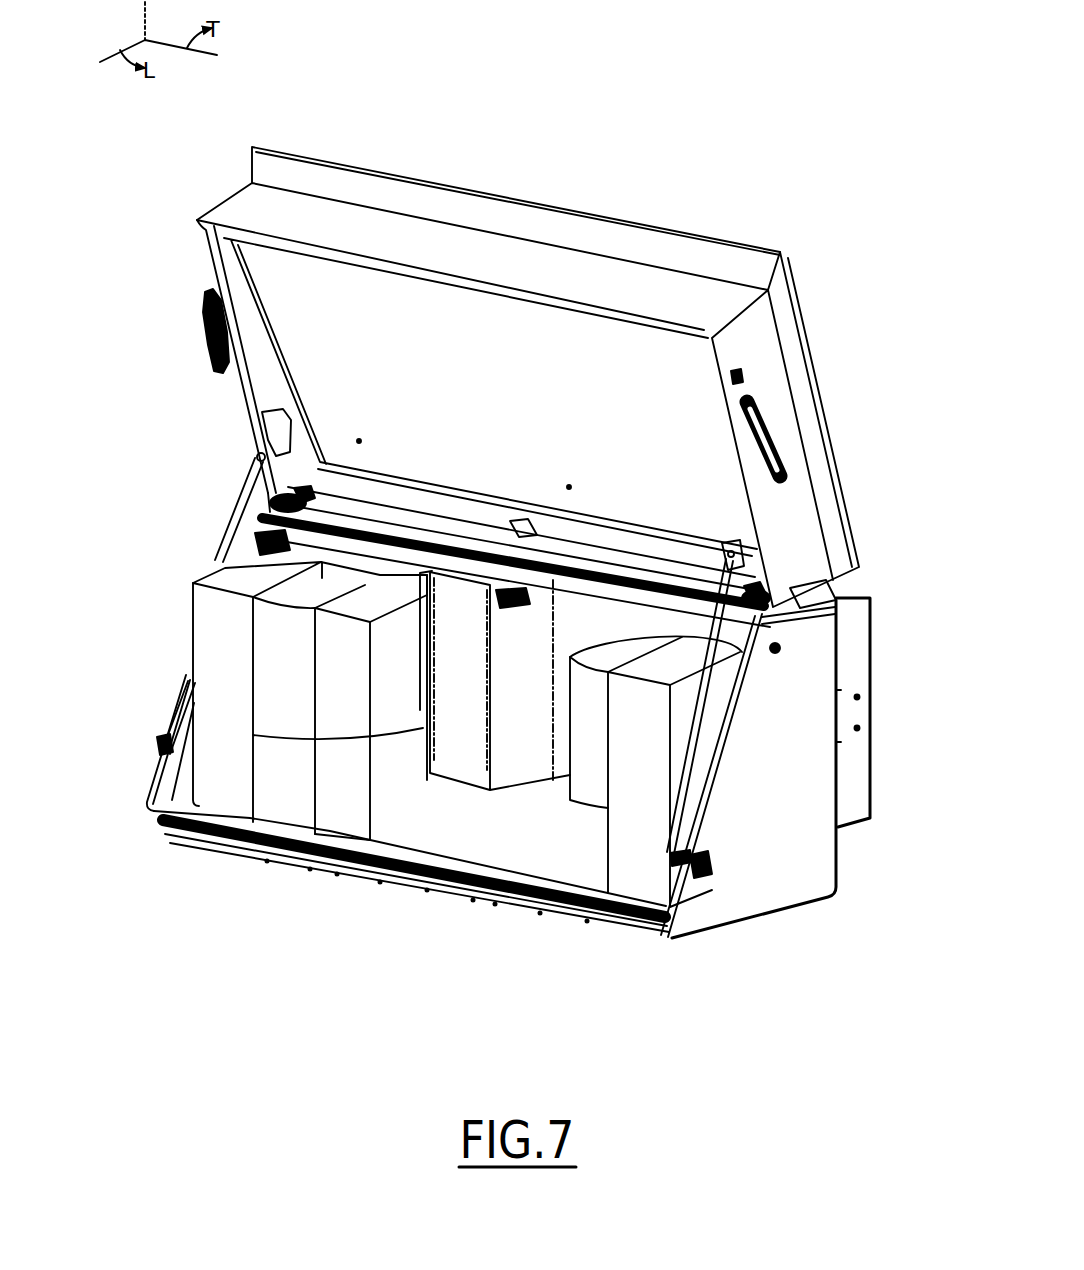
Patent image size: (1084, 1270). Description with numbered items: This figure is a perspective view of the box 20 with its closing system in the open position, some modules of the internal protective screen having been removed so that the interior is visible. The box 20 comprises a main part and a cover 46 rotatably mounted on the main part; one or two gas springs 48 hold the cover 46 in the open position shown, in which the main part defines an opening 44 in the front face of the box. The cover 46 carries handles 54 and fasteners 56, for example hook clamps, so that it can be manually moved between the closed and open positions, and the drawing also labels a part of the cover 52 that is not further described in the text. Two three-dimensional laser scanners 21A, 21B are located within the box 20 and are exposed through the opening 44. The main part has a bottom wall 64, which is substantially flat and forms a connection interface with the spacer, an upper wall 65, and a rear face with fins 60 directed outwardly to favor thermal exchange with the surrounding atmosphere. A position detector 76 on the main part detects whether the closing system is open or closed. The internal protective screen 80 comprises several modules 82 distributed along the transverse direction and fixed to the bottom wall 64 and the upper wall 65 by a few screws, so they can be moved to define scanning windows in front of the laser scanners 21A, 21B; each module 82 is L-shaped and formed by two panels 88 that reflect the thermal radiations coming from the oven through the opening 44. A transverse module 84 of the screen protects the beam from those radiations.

The box 20 is at (160, 430).
The 3D laser scanner 21A is at (285, 708).
The 3D laser scanner 21B is at (583, 767).
The opening 44 is at (205, 530).
The cover 46 is at (622, 280).
The gas spring 48 is at (254, 500).
The lid 52 is at (806, 338).
The handle 54 is at (775, 437).
The fastener 56 is at (157, 742).
The fins 60 is at (830, 592).
The bottom wall 64 is at (344, 882).
The upper wall 65 is at (817, 585).
The position detector 76 is at (500, 620).
The internal protective screen 80 is at (343, 797).
The module 82 is at (340, 632).
The transverse module 84 is at (497, 830).
The panel 88 is at (222, 613).